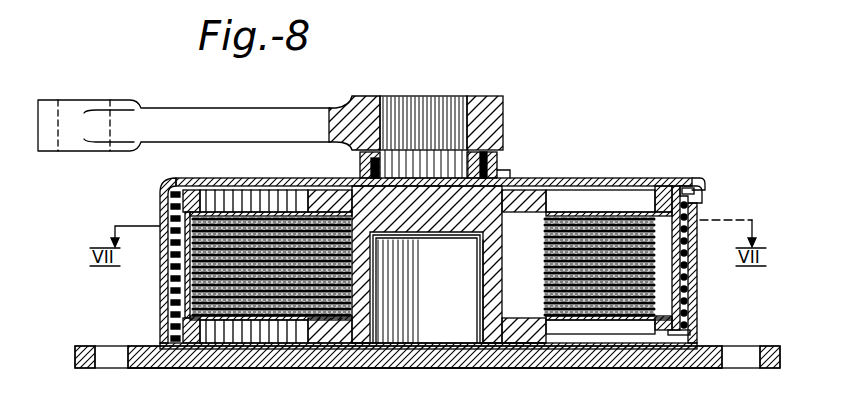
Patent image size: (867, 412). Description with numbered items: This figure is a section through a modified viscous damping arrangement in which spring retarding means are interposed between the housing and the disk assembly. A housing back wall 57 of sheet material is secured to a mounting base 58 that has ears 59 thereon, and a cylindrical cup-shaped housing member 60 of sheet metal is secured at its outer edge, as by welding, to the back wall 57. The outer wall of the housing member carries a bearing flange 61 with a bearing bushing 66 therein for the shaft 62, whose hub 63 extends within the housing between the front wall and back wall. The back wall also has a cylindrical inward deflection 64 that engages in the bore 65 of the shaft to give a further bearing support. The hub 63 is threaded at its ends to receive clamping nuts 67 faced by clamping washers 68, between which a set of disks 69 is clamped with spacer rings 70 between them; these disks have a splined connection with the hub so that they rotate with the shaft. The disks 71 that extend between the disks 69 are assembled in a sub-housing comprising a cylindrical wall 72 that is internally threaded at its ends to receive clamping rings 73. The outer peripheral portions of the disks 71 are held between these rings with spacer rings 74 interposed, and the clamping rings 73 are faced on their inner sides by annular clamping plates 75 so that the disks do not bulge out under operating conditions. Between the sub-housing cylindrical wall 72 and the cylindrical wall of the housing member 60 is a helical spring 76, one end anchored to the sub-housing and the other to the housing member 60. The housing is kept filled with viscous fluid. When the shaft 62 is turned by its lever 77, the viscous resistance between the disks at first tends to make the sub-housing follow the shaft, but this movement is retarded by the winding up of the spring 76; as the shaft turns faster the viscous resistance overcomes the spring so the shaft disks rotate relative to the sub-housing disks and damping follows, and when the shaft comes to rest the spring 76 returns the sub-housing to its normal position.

The housing back wall 57 is at (562, 368).
The mounting base 58 is at (475, 368).
The ears 59 is at (146, 346).
The cup-shaped housing member 60 is at (614, 163).
The bearing flange 61 is at (497, 172).
The shaft 62 is at (472, 72).
The hub 63 is at (458, 250).
The cylindrical inward deflection 64 is at (482, 328).
The bore 65 is at (483, 280).
The bearing bushing 66 is at (497, 160).
The clamping nuts 67 is at (524, 346).
The clamping washers 68 is at (545, 322).
The disks 69 is at (503, 296).
The spacer rings 70 is at (480, 289).
The disks 71 is at (697, 272).
The cylindrical wall 72 is at (697, 208).
The clamping rings 73 is at (658, 163).
The spacer rings 74 is at (697, 250).
The annular clamping plates 75 is at (642, 318).
The helical spring 76 is at (697, 294).
The lever 77 is at (312, 90).